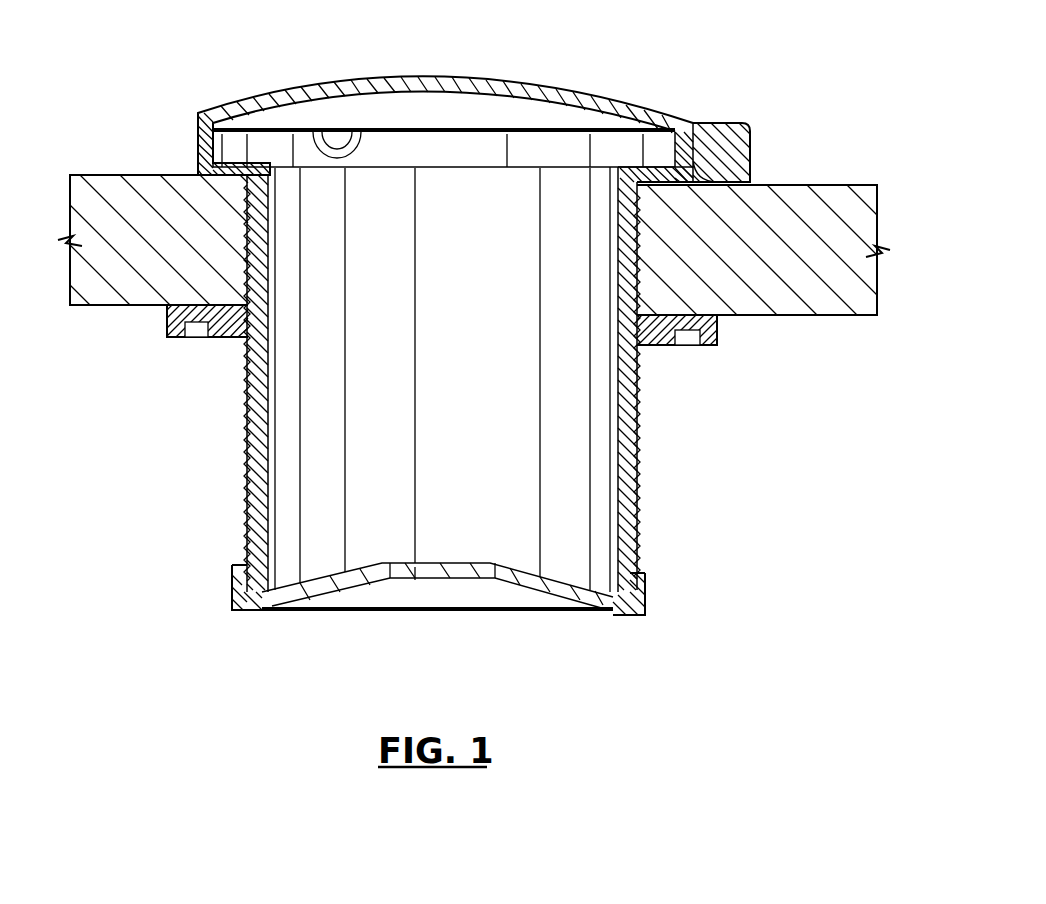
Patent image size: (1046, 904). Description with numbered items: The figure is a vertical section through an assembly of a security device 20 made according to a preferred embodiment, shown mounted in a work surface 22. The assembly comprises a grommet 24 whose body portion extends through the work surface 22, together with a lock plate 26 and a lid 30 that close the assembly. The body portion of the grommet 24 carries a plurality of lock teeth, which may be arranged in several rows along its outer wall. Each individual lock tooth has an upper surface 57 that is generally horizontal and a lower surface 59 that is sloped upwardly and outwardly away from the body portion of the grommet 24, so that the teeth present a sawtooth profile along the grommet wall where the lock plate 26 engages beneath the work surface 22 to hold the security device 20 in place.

The security device 20 is at (858, 120).
The work surface 22 is at (97, 307).
The grommet 24 is at (641, 420).
The lock plate 26 is at (716, 350).
The lid 30 is at (611, 106).
The upper surface 57 is at (245, 517).
The lower surface 59 is at (248, 527).